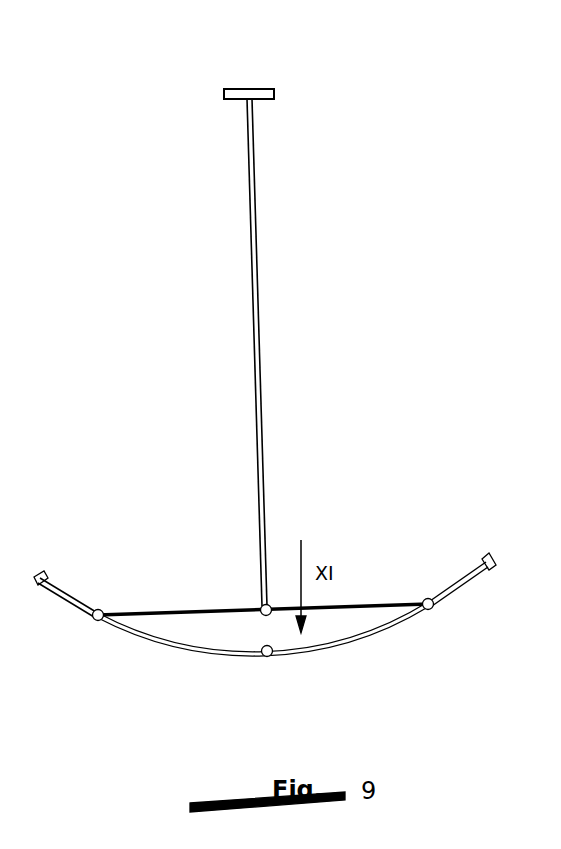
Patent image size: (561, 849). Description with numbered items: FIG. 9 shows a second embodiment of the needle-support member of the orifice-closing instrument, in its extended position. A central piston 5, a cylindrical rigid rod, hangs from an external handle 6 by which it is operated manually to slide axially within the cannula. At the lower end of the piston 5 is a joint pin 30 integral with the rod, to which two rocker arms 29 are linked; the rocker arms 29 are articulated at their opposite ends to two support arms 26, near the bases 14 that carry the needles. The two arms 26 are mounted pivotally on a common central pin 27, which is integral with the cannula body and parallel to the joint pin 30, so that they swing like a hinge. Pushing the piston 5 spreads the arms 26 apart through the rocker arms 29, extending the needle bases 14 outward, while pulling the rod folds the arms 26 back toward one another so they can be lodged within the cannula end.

The central piston 5 is at (254, 296).
The external handle 6 is at (232, 90).
The bases 14 is at (50, 572).
The arms 26 is at (167, 646).
The central pin 27 is at (268, 658).
The rocker arms 29 is at (180, 612).
The joint pin 30 is at (261, 605).